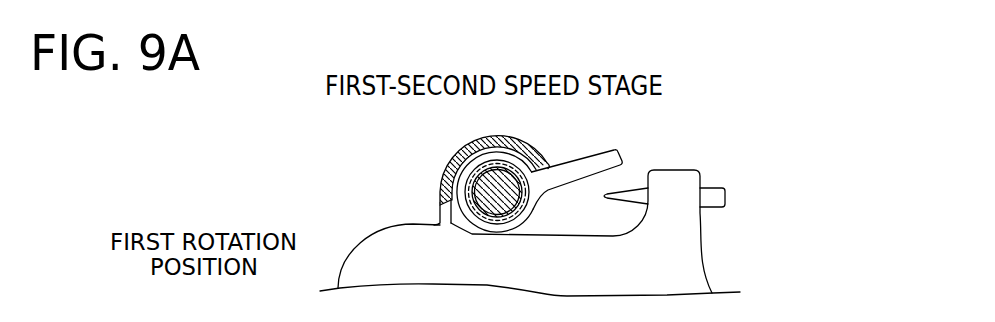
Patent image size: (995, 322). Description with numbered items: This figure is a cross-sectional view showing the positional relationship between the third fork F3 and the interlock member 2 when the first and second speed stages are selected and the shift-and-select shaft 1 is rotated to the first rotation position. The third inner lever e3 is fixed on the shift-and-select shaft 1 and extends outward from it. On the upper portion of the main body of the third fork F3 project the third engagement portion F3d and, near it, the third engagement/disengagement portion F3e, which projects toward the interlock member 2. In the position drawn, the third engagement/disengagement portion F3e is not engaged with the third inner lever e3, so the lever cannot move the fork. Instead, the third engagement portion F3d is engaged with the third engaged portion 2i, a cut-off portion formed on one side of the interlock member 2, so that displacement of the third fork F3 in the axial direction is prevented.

The shift-and-select shaft 1 is at (508, 168).
The interlock member 2 is at (448, 140).
The third engaged portion 2i is at (443, 176).
The third inner lever e3 is at (587, 168).
The third fork F3 is at (364, 236).
The third engagement portion F3d is at (439, 219).
The third engagement/disengagement portion F3e is at (628, 197).